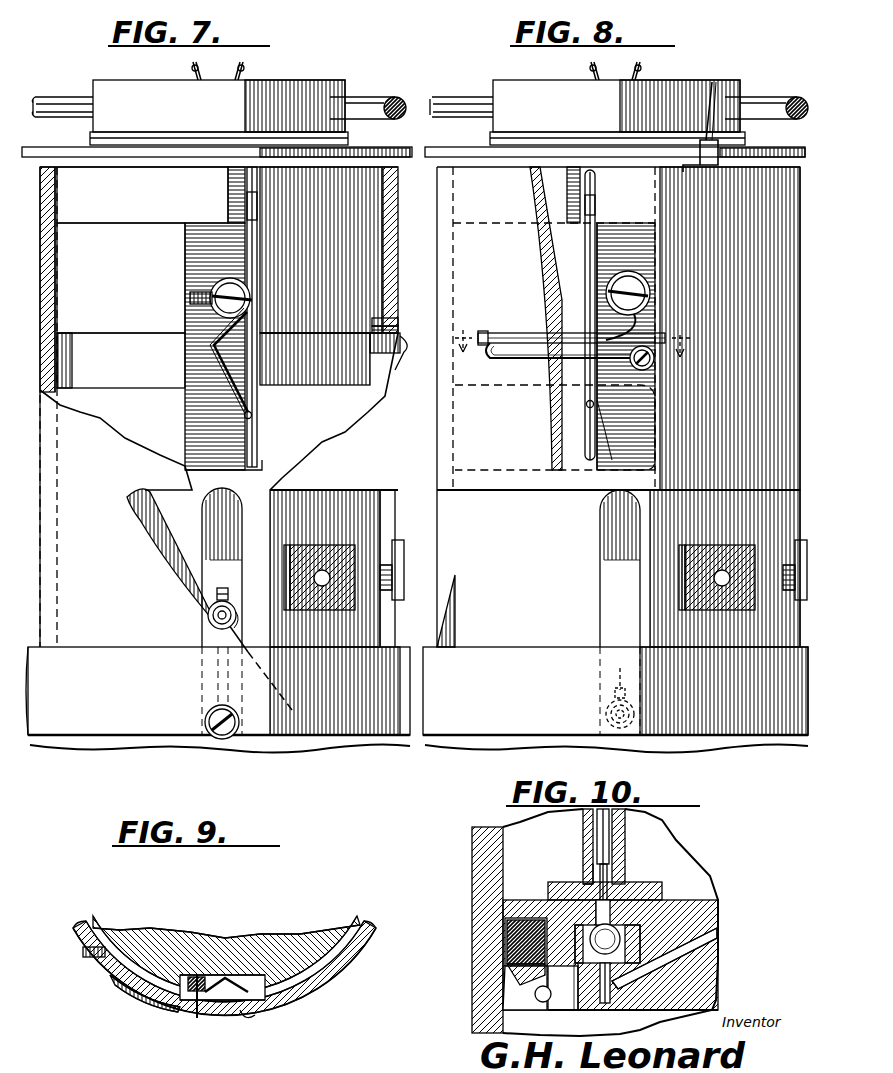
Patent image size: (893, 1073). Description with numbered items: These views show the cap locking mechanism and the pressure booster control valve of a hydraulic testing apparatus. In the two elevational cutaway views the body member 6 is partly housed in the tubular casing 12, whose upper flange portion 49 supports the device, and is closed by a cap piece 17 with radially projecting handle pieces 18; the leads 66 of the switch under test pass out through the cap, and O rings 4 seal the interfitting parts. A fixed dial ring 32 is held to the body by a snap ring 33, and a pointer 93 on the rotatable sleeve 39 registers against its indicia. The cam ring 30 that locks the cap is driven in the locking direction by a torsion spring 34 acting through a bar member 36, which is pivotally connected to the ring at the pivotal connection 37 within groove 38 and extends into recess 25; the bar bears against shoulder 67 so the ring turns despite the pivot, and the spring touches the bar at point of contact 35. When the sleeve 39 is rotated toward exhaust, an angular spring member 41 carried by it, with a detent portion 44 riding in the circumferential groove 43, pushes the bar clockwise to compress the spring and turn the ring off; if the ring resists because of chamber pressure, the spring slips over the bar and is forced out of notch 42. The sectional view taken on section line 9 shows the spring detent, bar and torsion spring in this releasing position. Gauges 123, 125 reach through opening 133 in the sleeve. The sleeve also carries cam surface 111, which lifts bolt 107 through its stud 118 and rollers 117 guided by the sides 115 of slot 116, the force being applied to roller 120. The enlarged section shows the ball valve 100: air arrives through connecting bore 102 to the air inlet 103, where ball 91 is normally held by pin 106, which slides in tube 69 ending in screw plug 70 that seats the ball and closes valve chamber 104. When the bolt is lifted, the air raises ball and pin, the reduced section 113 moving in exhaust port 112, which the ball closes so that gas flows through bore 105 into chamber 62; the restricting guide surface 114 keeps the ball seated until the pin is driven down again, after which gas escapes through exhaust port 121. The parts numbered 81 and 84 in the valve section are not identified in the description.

In FIG. 10, the O rings 4 is at (505, 941).
In FIG. 7, the body member 6 is at (383, 518).
In FIG. 9, the body member 6 is at (123, 925).
In FIG. 8, the section line 9 is at (572, 354).
In FIG. 10, the tubular casing 12 is at (480, 885).
In FIG. 7, the cap piece 17 is at (298, 80).
In FIG. 8, the cap piece 17 is at (685, 80).
In FIG. 7, the handle pieces 18 is at (55, 97).
In FIG. 8, the handle pieces 18 is at (450, 97).
In FIG. 7, the recess 25 is at (185, 256).
In FIG. 8, the recess 25 is at (626, 346).
In FIG. 9, the recess 25 is at (276, 975).
In FIG. 7, the cam ring 30 is at (116, 208).
In FIG. 8, the cam ring 30 is at (528, 210).
In FIG. 7, the fixed dial ring 32 is at (52, 147).
In FIG. 8, the fixed dial ring 32 is at (447, 147).
In FIG. 7, the snap ring 33 is at (347, 148).
In FIG. 8, the snap ring 33 is at (750, 148).
In FIG. 7, the torsion spring 34 is at (230, 278).
In FIG. 8, the torsion spring 34 is at (630, 272).
In FIG. 9, the torsion spring 34 is at (192, 975).
In FIG. 7, the point of contact 35 is at (244, 416).
In FIG. 8, the point of contact 35 is at (586, 404).
In FIG. 7, the bar member 36 is at (254, 346).
In FIG. 8, the bar member 36 is at (614, 400).
In FIG. 9, the bar member 36 is at (198, 1018).
In FIG. 7, the pivotal connection 37 is at (250, 170).
In FIG. 8, the pivotal connection 37 is at (596, 172).
In FIG. 7, the groove 38 is at (228, 183).
In FIG. 8, the groove 38 is at (568, 178).
In FIG. 7, the sleeve 39 is at (398, 263).
In FIG. 8, the sleeve 39 is at (437, 235).
In FIG. 9, the sleeve 39 is at (325, 977).
In FIG. 7, the angular spring member 41 is at (401, 345).
In FIG. 8, the angular spring member 41 is at (528, 352).
In FIG. 9, the angular spring member 41 is at (150, 1005).
In FIG. 7, the notch 42 is at (398, 330).
In FIG. 8, the notch 42 is at (520, 333).
In FIG. 9, the notch 42 is at (83, 958).
In FIG. 7, the circumferential groove 43 is at (132, 378).
In FIG. 8, the circumferential groove 43 is at (499, 386).
In FIG. 9, the circumferential groove 43 is at (350, 940).
In FIG. 7, the detent portion 44 is at (398, 318).
In FIG. 8, the detent portion 44 is at (640, 332).
In FIG. 9, the detent portion 44 is at (219, 978).
In FIG. 7, the flange portion 49 is at (160, 748).
In FIG. 8, the flange portion 49 is at (487, 747).
In FIG. 10, the chamber 62 is at (650, 1024).
In FIG. 7, the leads 66 is at (236, 73).
In FIG. 8, the leads 66 is at (633, 73).
In FIG. 7, the shoulder 67 is at (252, 203).
In FIG. 8, the shoulder 67 is at (596, 205).
In FIG. 10, the tube 69 is at (583, 828).
In FIG. 10, the screw plug 70 is at (548, 888).
In FIG. 10, the valve body 81 is at (710, 900).
In FIG. 10, the bottom plate 84 is at (718, 994).
In FIG. 10, the ball 91 is at (622, 930).
In FIG. 8, the pointer 93 is at (716, 92).
In FIG. 10, the ball valve 100 is at (668, 884).
In FIG. 10, the connecting bore 102 is at (717, 936).
In FIG. 10, the air inlet 103 is at (606, 1005).
In FIG. 10, the valve chamber 104 is at (648, 939).
In FIG. 10, the bore 105 is at (576, 1005).
In FIG. 10, the pin 106 is at (609, 833).
In FIG. 7, the bolt 107 is at (215, 597).
In FIG. 8, the bolt 107 is at (618, 670).
In FIG. 7, the cam surface 111 is at (150, 540).
In FIG. 8, the cam surface 111 is at (452, 622).
In FIG. 10, the exhaust port 112 is at (607, 905).
In FIG. 10, the reduced section 113 is at (609, 914).
In FIG. 10, the restricting guide surface 114 is at (528, 985).
In FIG. 7, the sides 115 is at (210, 538).
In FIG. 8, the sides 115 is at (622, 528).
In FIG. 7, the slot 116 is at (236, 496).
In FIG. 8, the slot 116 is at (600, 502).
In FIG. 7, the rollers 117 is at (232, 600).
In FIG. 8, the rollers 117 is at (610, 698).
In FIG. 7, the stud 118 is at (208, 619).
In FIG. 7, the roller 120 is at (237, 620).
In FIG. 8, the roller 120 is at (604, 719).
In FIG. 10, the exhaust port 121 is at (586, 870).
In FIG. 7, the gauge 123 is at (350, 600).
In FIG. 8, the gauge 123 is at (755, 605).
In FIG. 7, the gauge 125 is at (410, 556).
In FIG. 8, the gauge 125 is at (803, 540).
In FIG. 7, the opening 133 is at (392, 490).
In FIG. 8, the opening 133 is at (492, 492).